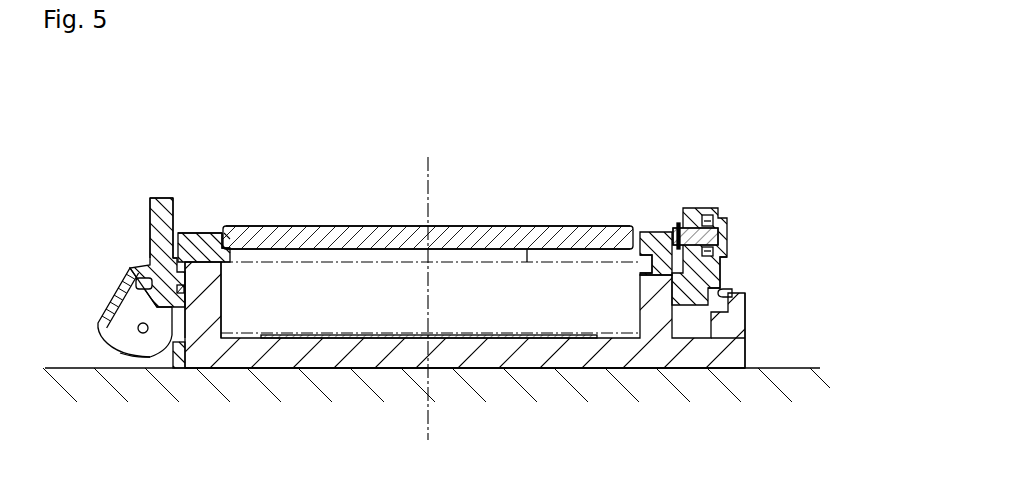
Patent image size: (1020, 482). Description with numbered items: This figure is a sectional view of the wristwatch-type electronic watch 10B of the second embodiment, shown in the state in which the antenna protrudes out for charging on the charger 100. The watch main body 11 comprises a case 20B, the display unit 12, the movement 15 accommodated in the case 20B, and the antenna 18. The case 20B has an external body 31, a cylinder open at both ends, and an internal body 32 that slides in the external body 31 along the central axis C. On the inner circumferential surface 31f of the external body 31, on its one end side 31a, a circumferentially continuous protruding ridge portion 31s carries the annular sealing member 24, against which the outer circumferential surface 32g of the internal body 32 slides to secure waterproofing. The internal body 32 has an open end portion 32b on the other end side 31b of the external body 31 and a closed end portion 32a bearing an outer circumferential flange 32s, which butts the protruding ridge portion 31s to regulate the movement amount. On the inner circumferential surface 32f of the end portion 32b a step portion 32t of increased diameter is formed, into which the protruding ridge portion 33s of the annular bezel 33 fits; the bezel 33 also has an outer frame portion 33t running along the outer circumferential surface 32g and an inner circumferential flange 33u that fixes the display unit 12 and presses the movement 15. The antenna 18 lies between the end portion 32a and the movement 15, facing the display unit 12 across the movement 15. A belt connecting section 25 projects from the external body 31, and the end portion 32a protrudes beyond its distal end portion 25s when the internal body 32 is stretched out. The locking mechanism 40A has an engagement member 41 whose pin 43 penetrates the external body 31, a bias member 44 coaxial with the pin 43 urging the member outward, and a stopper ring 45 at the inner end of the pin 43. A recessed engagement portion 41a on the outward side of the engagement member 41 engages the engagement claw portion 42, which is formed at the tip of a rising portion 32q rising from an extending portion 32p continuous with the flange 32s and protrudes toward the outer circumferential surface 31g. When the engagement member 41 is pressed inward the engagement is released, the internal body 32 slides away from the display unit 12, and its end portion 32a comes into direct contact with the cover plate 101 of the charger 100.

The wristwatch-type electronic watch 10B is at (585, 160).
The watch main body 11 is at (483, 224).
The display unit 12 is at (352, 226).
The movement 15 is at (527, 250).
The antenna 18 is at (543, 340).
The case 20B is at (150, 212).
The annular sealing member 24 is at (178, 288).
The belt connecting section 25 is at (106, 318).
The distal end portion of the belt connecting section 25s is at (143, 357).
The external body 31 is at (148, 238).
The one end side 31a is at (162, 350).
The other end side 31b is at (155, 200).
The inner circumferential surface 31f is at (175, 230).
The outer circumferential surface 31g is at (148, 220).
The protruding ridge portion 31s is at (187, 298).
The internal body 32 is at (312, 368).
The end portion 32a is at (222, 370).
The end portion 32b is at (197, 245).
The inner circumferential surface 32f is at (227, 287).
The outer circumferential surface 32g is at (184, 305).
The extending portion 32p is at (735, 368).
The rising portion 32q is at (747, 322).
The outer circumferential flange 32s is at (172, 310).
The step portion 32t is at (227, 240).
The annular bezel 33 is at (651, 232).
The protruding ridge portion 33s is at (640, 264).
The outer frame portion 33t is at (177, 265).
The inner circumferential flange 33u is at (237, 232).
The locking mechanism 40A is at (743, 205).
The engagement member 41 is at (728, 228).
The recessed engagement portion 41a is at (722, 268).
The engagement claw portion 42 is at (724, 292).
The pin 43 is at (708, 216).
The bias member 44 is at (708, 247).
The stopper ring 45 is at (678, 228).
The charger 100 is at (778, 366).
The cover plate 101 is at (798, 366).
The central axis C is at (428, 184).